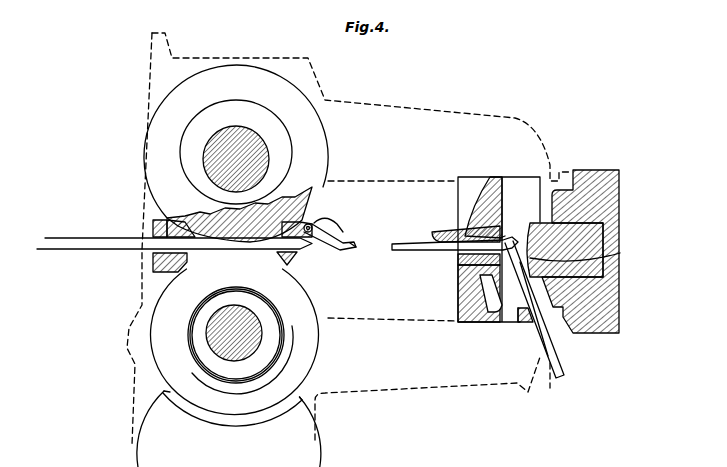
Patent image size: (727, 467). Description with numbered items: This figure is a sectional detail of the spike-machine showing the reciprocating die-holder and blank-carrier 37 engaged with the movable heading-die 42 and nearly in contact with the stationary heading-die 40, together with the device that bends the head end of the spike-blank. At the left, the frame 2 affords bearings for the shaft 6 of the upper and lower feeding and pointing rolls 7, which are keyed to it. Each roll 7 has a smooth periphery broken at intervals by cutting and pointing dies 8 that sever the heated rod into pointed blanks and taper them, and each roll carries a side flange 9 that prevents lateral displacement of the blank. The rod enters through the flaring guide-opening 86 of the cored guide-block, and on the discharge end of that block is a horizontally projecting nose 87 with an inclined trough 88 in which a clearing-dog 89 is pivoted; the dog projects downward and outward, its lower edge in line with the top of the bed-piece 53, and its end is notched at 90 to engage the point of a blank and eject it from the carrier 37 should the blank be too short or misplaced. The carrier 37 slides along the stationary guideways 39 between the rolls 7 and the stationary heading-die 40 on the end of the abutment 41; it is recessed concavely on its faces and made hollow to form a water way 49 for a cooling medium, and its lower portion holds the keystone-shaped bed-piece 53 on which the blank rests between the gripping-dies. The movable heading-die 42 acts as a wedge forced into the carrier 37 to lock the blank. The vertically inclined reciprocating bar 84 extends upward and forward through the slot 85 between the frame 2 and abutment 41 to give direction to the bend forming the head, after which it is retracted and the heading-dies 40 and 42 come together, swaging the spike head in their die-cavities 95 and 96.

The frame 2 is at (349, 239).
The shaft 6 is at (238, 127).
The feeding and pointing rolls 7 is at (232, 266).
The cutting and pointing dies 8 is at (292, 212).
The flange 9 is at (212, 415).
The reciprocating die-holder and blank-carrier 37 is at (499, 259).
The stationary guideways 39 is at (393, 240).
The stationary spike-heading die 40 is at (565, 250).
The abutment 41 is at (580, 241).
The movable heading-die 42 is at (450, 232).
The water way or chamber 49 is at (478, 290).
The bed-piece 53 is at (458, 258).
The reciprocating bar 84 is at (525, 322).
The slot or opening 85 is at (573, 325).
The flaring guide-opening 86 is at (153, 234).
The nose 87 is at (313, 243).
The inclined trough or groove 88 is at (325, 228).
The clearing-dog 89 is at (345, 240).
The notch 90 is at (356, 246).
The die-cavity 95 is at (620, 253).
The die-cavity 96 is at (503, 236).